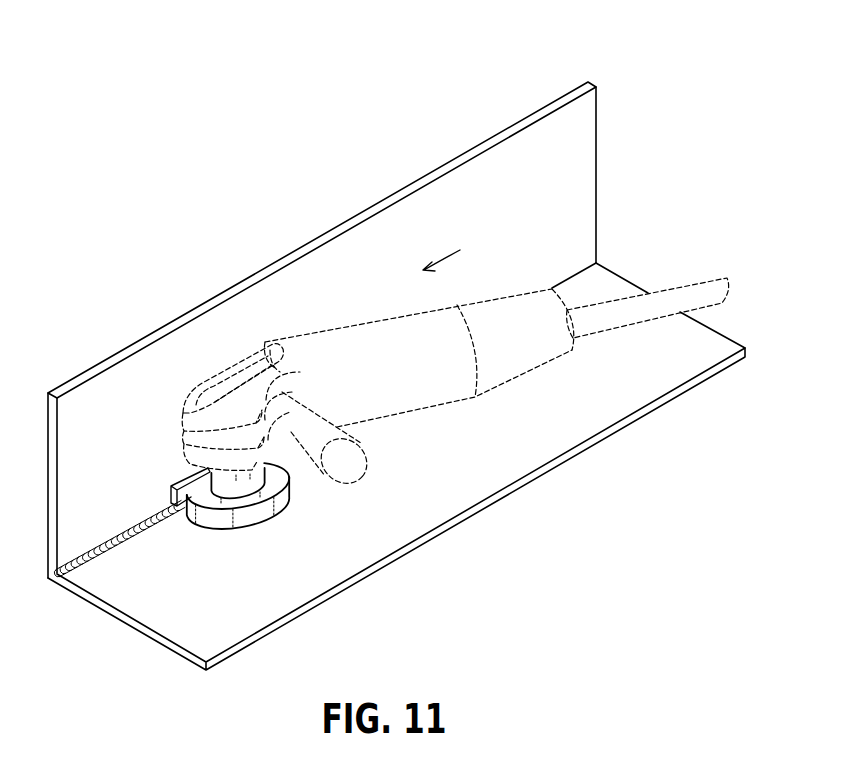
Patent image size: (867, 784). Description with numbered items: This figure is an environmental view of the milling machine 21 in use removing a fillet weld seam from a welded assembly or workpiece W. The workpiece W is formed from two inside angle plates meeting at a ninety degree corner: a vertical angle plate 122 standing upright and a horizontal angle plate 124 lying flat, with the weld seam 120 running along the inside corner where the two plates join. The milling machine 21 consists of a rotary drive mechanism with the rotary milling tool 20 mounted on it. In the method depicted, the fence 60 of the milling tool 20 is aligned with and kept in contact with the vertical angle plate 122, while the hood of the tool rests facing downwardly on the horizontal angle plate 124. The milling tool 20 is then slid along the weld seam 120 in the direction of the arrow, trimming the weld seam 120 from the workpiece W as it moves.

The workpiece W is at (521, 20).
The vertical angle plate 122 is at (573, 185).
The horizontal angle plate 124 is at (472, 490).
The weld seam 120 is at (110, 537).
The fence 60 is at (178, 477).
The milling tool 20 is at (203, 534).
The milling machine 21 is at (277, 547).